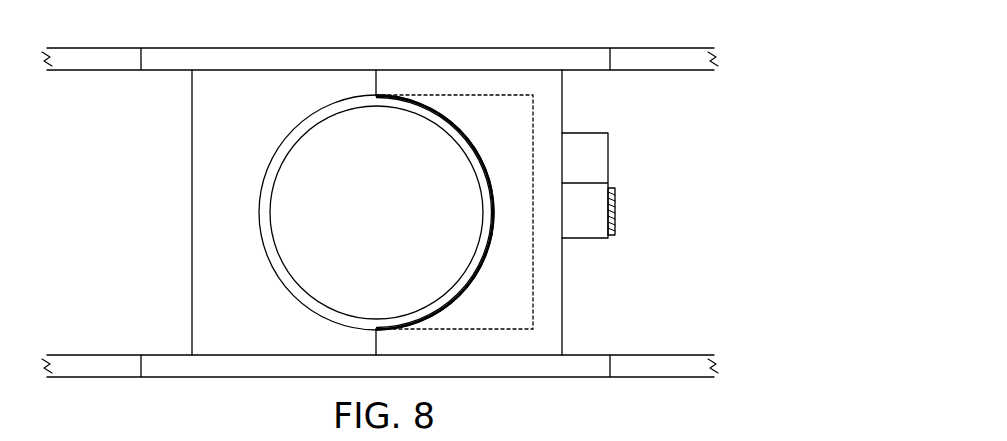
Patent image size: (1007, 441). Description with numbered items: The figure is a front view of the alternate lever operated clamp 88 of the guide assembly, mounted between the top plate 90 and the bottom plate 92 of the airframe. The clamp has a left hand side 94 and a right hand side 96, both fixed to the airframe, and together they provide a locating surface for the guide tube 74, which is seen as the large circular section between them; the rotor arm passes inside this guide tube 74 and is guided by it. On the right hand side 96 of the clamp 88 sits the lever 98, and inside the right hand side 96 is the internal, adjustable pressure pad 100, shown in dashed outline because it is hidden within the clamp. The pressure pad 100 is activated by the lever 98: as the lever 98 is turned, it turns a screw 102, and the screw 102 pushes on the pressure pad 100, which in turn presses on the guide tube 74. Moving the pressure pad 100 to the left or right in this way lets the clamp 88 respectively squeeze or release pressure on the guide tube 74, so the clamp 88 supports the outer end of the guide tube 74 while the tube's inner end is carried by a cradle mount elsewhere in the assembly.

The guide tube 74 is at (480, 235).
The lever operated clamp 88 is at (160, 210).
The top plate 90 is at (698, 50).
The bottom plate 92 is at (681, 355).
The left hand side 94 is at (191, 152).
The right hand side 96 is at (563, 298).
The lever 98 is at (609, 145).
The pressure pad 100 is at (534, 247).
The screw 102 is at (613, 206).